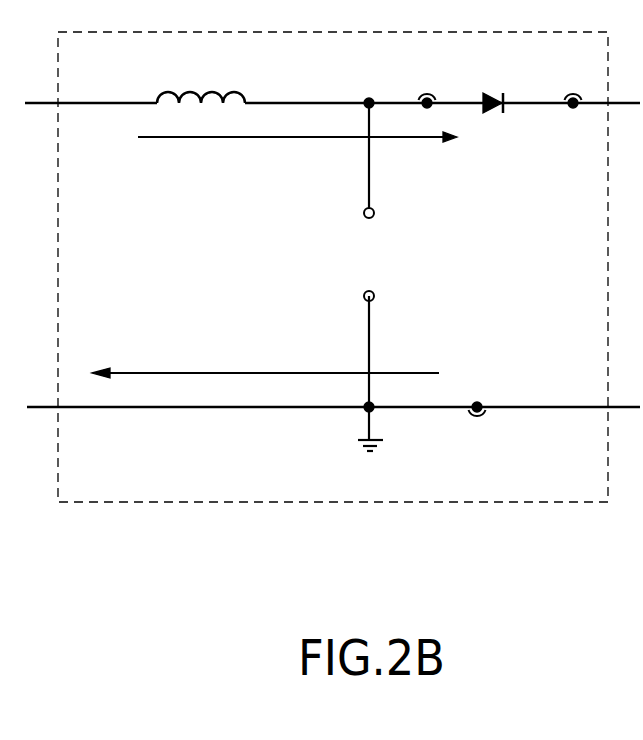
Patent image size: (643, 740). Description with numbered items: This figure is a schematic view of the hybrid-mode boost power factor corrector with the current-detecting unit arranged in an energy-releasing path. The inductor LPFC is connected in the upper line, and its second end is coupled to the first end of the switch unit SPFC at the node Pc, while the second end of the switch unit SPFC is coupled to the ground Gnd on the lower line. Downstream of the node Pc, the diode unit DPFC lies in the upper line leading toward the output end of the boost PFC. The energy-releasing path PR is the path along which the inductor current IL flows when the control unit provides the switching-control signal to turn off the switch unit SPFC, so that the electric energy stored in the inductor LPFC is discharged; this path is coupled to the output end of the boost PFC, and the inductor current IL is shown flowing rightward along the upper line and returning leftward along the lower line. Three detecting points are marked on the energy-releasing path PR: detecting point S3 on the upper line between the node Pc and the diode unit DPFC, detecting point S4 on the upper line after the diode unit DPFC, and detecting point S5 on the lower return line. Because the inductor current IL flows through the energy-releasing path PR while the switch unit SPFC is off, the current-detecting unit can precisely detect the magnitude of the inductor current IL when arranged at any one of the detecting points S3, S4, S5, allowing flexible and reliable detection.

The inductor LPFC is at (201, 80).
The inductor current IL is at (274, 255).
The common node Pc is at (369, 85).
The switch unit SPFC is at (400, 255).
The detecting point S3 is at (424, 85).
The diode unit DPFC is at (494, 86).
The detecting point S4 is at (571, 85).
The detecting point S5 is at (474, 427).
The energy-releasing path PR is at (190, 373).
The ground Gnd is at (363, 447).